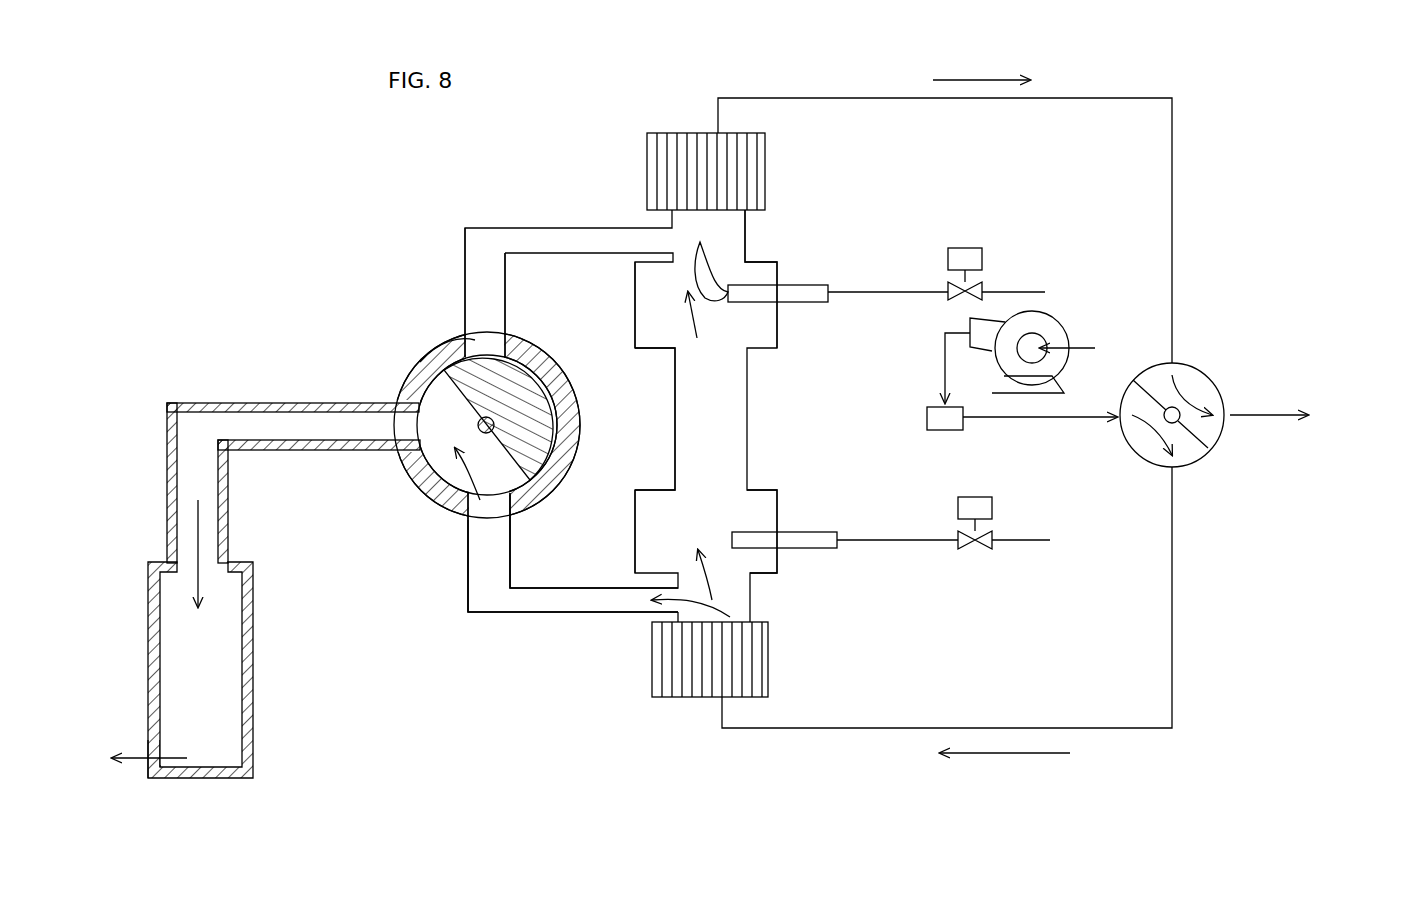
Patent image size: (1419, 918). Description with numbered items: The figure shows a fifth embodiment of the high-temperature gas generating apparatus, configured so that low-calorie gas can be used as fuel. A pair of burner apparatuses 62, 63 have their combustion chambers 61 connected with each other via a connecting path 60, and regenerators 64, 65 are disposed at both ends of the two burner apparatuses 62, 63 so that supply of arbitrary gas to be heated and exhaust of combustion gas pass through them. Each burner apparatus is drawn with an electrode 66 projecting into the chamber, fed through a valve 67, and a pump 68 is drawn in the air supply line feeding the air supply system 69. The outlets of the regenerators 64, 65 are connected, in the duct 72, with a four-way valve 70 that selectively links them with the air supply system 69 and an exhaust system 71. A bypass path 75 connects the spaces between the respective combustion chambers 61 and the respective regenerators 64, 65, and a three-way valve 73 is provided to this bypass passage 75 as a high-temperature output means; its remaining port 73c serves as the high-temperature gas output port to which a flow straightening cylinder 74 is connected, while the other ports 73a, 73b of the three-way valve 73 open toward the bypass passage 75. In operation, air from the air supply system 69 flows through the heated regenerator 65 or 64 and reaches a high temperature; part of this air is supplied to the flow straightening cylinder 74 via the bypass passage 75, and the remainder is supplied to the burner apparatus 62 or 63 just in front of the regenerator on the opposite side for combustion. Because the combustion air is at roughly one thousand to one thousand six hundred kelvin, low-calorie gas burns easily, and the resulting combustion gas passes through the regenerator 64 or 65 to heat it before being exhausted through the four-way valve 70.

The connecting path 60 is at (735, 425).
The combustion chamber 61 is at (645, 303).
The burner apparatus 62 is at (803, 268).
The burner apparatus 63 is at (795, 592).
The regenerator 64 is at (750, 175).
The regenerator 65 is at (758, 657).
The electrode 66 is at (805, 302).
The valve 67 is at (970, 250).
The pump 68 is at (1048, 323).
The air supply system 69 is at (1056, 418).
The four-way valve 70 is at (1200, 373).
The exhaust system 71 is at (1258, 412).
The duct 72 is at (855, 98).
The three-way valve 73 is at (420, 362).
The upper valve port 73a is at (470, 342).
The lower valve port 73b is at (470, 500).
The remaining port 73c is at (405, 440).
The flow straightening cylinder 74 is at (248, 660).
The bypass path 75 is at (503, 612).